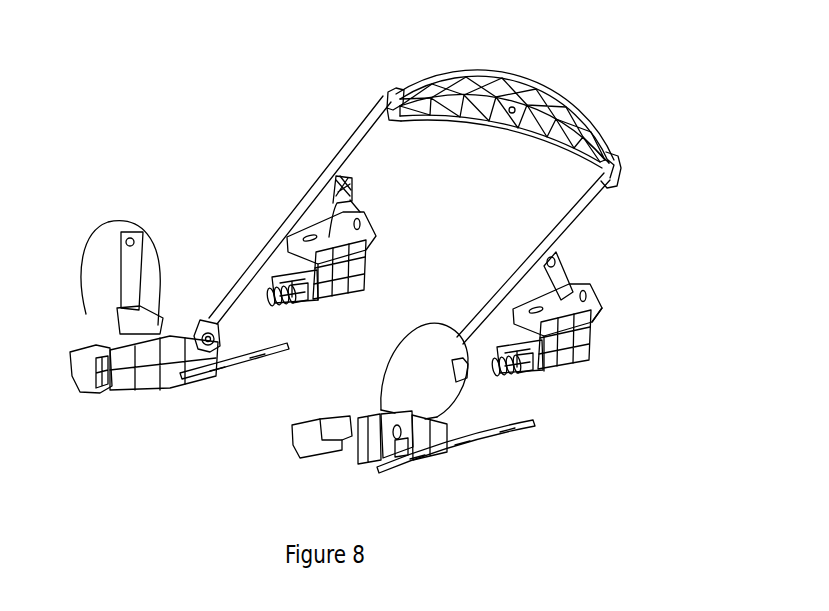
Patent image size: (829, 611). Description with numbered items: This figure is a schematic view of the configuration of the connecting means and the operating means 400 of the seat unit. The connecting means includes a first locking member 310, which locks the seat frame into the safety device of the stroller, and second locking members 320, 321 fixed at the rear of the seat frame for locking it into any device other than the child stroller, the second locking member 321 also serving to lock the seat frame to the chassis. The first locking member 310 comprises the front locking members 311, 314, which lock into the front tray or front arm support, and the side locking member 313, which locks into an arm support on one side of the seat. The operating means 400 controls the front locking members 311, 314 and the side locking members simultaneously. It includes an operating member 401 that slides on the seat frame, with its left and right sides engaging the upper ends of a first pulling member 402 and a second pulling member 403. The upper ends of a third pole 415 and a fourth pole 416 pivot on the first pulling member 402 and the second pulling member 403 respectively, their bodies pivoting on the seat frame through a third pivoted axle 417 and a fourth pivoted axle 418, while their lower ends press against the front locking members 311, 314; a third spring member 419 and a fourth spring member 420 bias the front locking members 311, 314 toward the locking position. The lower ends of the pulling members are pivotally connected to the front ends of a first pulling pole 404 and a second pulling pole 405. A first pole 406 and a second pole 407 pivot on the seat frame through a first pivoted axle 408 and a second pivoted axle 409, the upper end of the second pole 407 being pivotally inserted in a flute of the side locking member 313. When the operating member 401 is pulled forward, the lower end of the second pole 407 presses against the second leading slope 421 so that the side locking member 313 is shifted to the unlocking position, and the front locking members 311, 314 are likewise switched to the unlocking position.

The first locking member 310 is at (455, 273).
The front locking member 311 is at (372, 228).
The side locking member 313 is at (468, 369).
The front locking member 314 is at (604, 300).
The second locking member 320 is at (83, 374).
The second locking member 321 is at (310, 445).
The operating means 400 is at (531, 106).
The operating member 401 is at (515, 80).
The first pulling member 402 is at (358, 153).
The second pulling member 403 is at (584, 205).
The first pulling pole 404 is at (200, 330).
The second pulling pole 405 is at (438, 458).
The first pole 406 is at (113, 317).
The second pole 407 is at (408, 462).
The first pivoted axle 408 is at (133, 384).
The second pivoted axle 409 is at (377, 458).
The third pole 415 is at (360, 213).
The fourth pole 416 is at (561, 264).
The third pivoted axle 417 is at (360, 224).
The fourth pivoted axle 418 is at (580, 340).
The third spring member 419 is at (295, 305).
The fourth spring member 420 is at (527, 373).
The second leading slope 421 is at (392, 458).